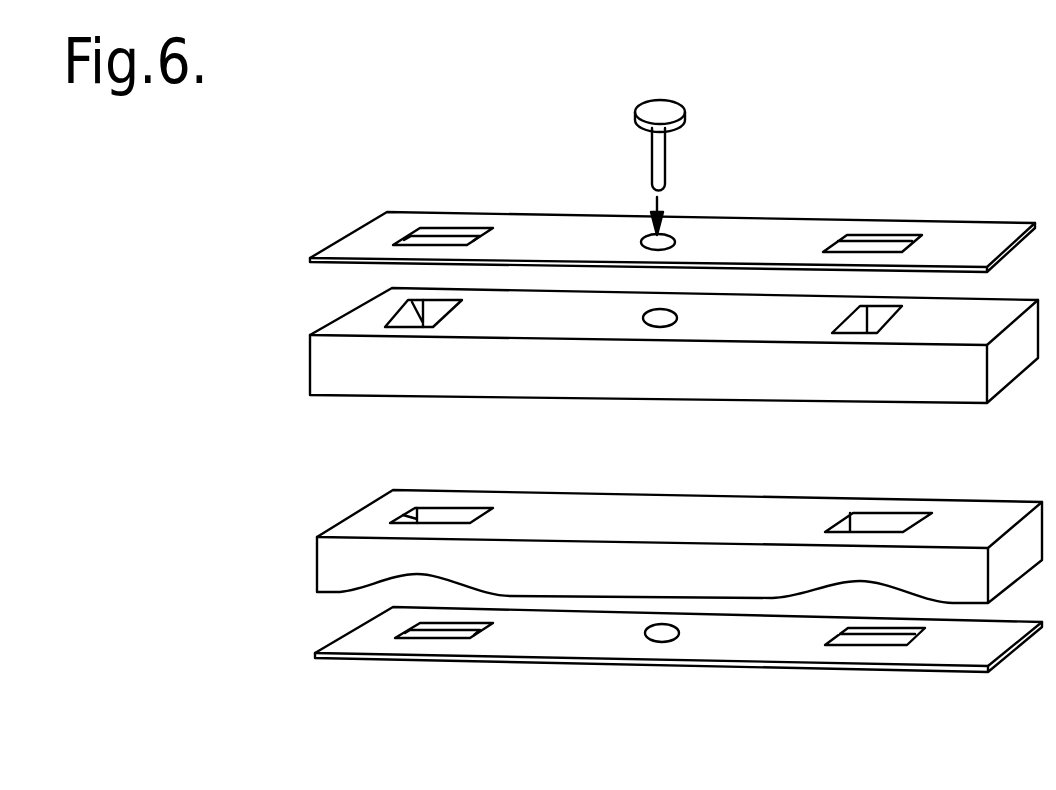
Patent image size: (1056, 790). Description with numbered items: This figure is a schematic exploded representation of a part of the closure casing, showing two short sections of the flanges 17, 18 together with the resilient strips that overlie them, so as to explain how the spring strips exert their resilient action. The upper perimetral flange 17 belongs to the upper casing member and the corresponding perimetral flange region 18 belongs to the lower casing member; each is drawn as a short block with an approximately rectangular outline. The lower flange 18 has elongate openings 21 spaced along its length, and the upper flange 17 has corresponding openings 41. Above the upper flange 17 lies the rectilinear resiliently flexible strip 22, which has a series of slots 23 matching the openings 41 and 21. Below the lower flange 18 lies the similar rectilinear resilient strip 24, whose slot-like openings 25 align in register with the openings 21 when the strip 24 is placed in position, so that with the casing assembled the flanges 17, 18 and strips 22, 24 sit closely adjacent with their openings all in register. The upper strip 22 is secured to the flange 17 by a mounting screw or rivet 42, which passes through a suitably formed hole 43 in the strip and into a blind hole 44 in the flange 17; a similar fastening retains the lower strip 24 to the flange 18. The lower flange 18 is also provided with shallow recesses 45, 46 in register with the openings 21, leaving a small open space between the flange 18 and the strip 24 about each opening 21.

The perimetral flange 17 is at (323, 367).
The perimetral flange region 18 is at (327, 565).
The elongate openings 21 is at (437, 512).
The resiliently flexible strip 22 is at (513, 232).
The slots 23 is at (407, 233).
The resilient strip 24 is at (602, 635).
The slot-like openings 25 is at (447, 632).
The openings 41 is at (408, 308).
The mounting screw or rivet 42 is at (652, 152).
The hole 43 is at (668, 237).
The blind hole 44 is at (678, 322).
The shallow recess 45 is at (393, 582).
The shallow recess 46 is at (848, 590).